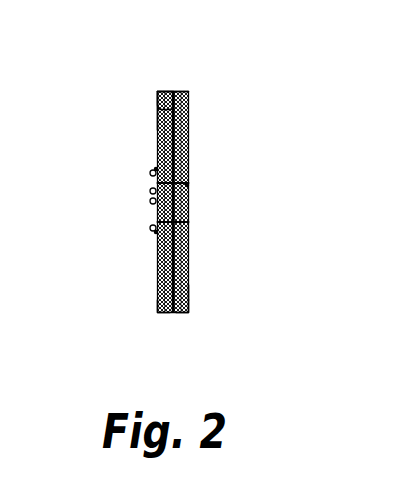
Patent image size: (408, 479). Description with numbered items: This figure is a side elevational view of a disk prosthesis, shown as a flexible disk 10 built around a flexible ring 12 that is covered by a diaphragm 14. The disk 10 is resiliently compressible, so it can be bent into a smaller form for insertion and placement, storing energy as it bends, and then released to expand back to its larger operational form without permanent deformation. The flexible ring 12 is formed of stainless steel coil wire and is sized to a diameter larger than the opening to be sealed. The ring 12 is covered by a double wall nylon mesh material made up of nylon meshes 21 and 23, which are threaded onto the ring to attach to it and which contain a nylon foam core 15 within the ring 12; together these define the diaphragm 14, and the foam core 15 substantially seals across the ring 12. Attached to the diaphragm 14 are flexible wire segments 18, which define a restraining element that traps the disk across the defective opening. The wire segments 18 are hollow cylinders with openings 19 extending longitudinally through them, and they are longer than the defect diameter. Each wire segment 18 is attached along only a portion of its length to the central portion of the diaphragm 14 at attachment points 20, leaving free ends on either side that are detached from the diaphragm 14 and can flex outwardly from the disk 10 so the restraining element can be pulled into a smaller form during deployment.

The flexible disk 10 is at (189, 140).
The flexible ring 12 is at (176, 91).
The diaphragm 14 is at (158, 90).
The nylon foam core 15 is at (156, 103).
The flexible wire segments 18 is at (150, 172).
The openings 19 is at (150, 191).
The attachment points 20 is at (152, 170).
The nylon mesh 21 is at (160, 312).
The nylon mesh 23 is at (187, 312).